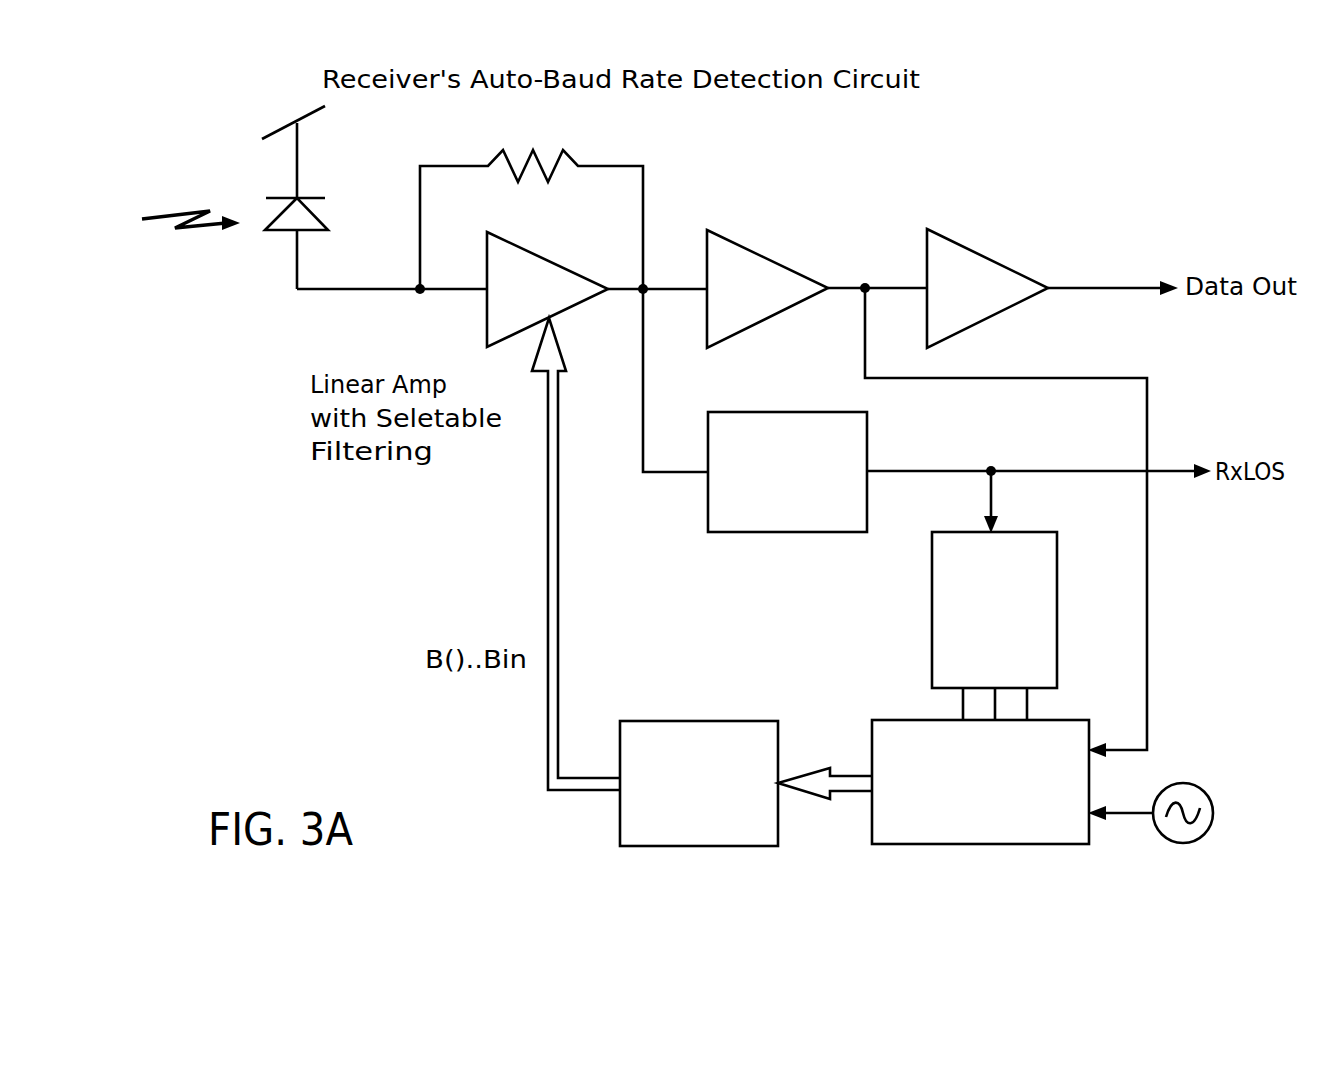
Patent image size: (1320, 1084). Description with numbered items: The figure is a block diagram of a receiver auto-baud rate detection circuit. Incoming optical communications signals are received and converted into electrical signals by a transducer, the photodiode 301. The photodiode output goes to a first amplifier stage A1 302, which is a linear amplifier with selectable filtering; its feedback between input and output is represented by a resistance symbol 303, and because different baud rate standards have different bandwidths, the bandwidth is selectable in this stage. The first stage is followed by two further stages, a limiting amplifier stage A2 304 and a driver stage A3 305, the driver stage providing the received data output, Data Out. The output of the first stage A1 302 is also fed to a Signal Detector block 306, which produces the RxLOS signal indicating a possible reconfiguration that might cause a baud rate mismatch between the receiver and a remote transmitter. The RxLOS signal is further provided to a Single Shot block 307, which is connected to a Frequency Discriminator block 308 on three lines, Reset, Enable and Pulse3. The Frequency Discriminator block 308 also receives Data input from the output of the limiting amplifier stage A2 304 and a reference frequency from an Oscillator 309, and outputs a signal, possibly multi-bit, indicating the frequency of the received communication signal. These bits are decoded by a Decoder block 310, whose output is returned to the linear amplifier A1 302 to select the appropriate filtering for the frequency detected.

The photodiode 301 is at (330, 224).
The first amplifier stage (A1) 302 is at (514, 240).
The resistance symbol 303 is at (573, 158).
The second amplifier stage (A2) 304 is at (792, 262).
The driver stage (A3) 305 is at (1013, 263).
The Signal Detector block 306 is at (867, 437).
The Single Shot block 307 is at (932, 655).
The Frequency Discriminator block 308 is at (872, 825).
The Oscillator 309 is at (1205, 791).
The Decoder block 310 is at (700, 848).